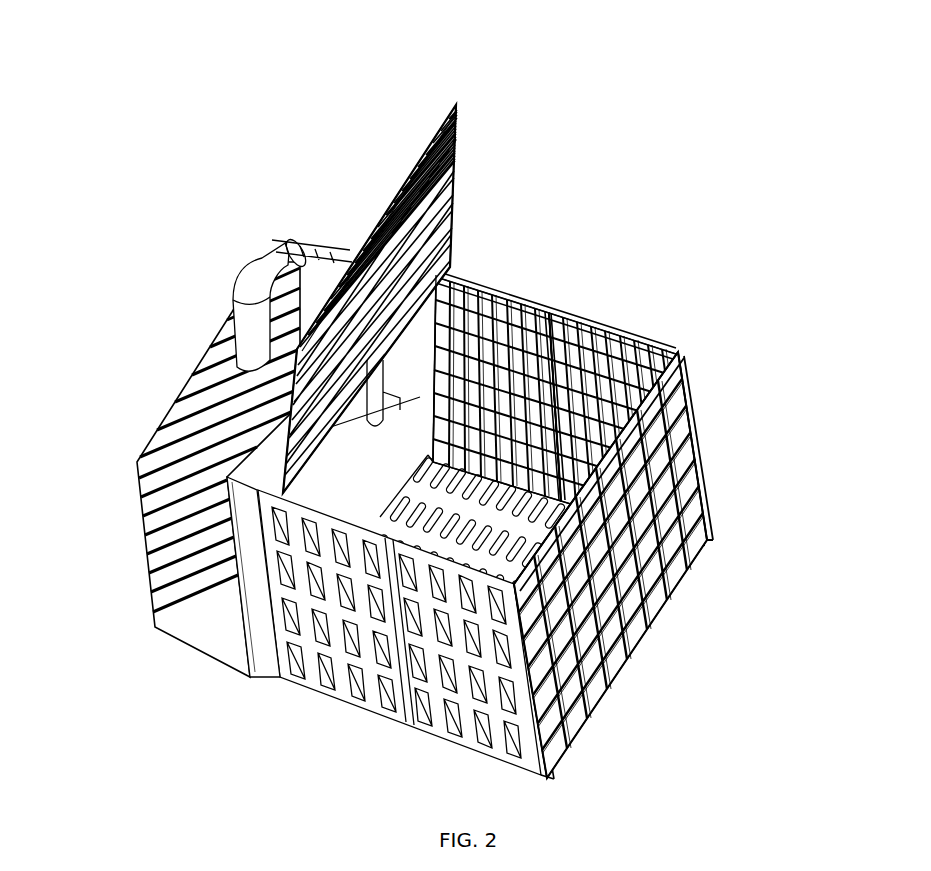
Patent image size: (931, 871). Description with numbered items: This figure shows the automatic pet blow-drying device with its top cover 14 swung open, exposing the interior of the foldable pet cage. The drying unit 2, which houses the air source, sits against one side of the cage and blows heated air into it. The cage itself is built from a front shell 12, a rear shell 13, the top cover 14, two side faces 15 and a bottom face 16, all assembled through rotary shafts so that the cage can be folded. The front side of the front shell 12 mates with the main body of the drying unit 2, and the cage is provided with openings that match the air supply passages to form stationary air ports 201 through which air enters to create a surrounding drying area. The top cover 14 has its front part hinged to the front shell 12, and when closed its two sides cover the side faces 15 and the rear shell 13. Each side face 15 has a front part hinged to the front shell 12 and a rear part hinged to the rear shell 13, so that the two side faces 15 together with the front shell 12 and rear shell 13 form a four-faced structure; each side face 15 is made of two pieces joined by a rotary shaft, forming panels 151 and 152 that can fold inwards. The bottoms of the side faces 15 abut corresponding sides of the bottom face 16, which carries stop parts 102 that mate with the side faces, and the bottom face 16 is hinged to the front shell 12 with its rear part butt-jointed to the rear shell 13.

The drying unit 2 is at (172, 568).
The front shell 12 is at (255, 617).
The rear shell 13 is at (650, 572).
The top cover 14 is at (462, 126).
The side face 15 is at (479, 465).
The bottom face 16 is at (692, 437).
The stop part 102 is at (656, 336).
The panel 151 is at (518, 288).
The panel 152 is at (610, 320).
The stationary air port 201 is at (456, 288).